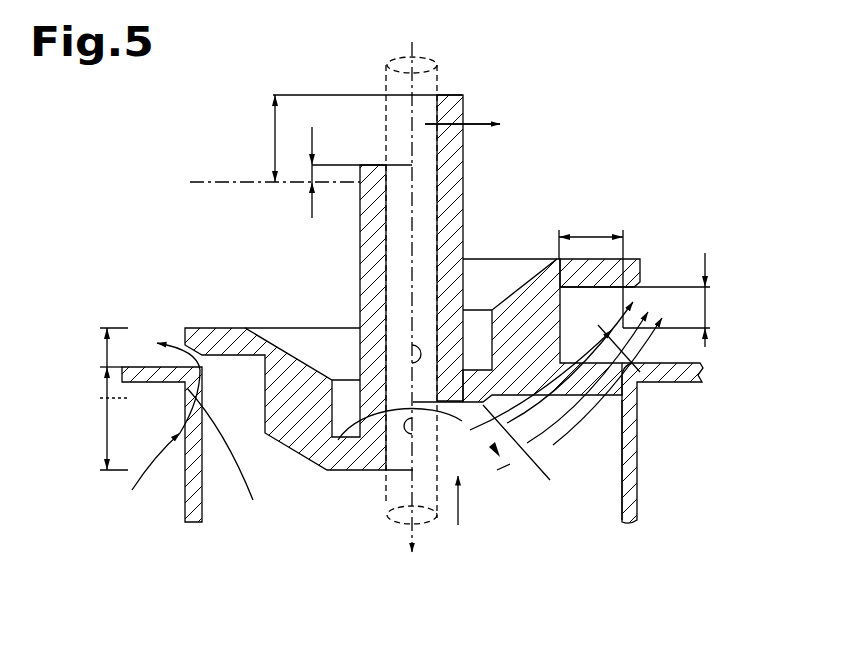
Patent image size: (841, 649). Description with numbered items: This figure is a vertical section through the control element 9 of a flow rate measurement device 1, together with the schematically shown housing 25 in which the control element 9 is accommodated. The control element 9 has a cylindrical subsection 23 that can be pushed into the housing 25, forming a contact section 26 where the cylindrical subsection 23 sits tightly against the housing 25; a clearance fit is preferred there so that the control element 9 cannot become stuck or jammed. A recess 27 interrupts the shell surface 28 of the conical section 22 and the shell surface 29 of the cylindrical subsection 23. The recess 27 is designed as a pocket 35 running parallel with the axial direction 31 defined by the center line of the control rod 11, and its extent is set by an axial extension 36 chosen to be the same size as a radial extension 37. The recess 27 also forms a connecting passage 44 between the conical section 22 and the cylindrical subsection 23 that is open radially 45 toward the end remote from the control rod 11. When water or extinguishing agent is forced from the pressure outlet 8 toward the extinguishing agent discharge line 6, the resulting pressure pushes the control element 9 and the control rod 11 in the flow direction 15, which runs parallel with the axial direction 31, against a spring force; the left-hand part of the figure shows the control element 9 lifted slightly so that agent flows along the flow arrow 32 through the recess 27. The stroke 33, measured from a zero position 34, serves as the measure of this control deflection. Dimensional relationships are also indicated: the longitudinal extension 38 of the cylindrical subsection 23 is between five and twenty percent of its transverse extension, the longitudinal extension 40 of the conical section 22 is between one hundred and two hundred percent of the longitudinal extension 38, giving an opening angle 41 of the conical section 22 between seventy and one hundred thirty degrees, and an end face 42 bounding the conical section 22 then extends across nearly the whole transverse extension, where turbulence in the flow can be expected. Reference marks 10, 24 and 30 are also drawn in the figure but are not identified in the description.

The flow rate measurement device 1 is at (626, 118).
The extinguishing agent discharge line 6 is at (328, 117).
The pressure outlet 8 is at (347, 577).
The control element 9 is at (457, 163).
The housing wall 10 is at (187, 396).
The control rod 11 is at (427, 515).
The flow direction 15 is at (462, 506).
The conical section 22 is at (102, 445).
The cylindrical subsection 23 is at (103, 375).
The upper section 24 is at (102, 358).
The housing 25 is at (632, 505).
The contact section 26 is at (157, 432).
The recess 27 is at (222, 362).
The shell surface 28 is at (281, 448).
The shell surface 29 is at (641, 296).
The hub top surface 30 is at (180, 334).
The axial direction 31 is at (408, 536).
The flow arrow 32 is at (247, 478).
The stroke 33 is at (272, 130).
The zero position 34 is at (207, 181).
The pocket 35 is at (613, 288).
The axial extension 36 is at (707, 300).
The radial extension 37 is at (590, 234).
The longitudinal extension 38 is at (103, 393).
The longitudinal extension 40 is at (103, 423).
The opening angle 41 is at (457, 422).
The end face 42 is at (528, 456).
The connecting passage 44 is at (645, 375).
The radial direction 45 is at (472, 120).